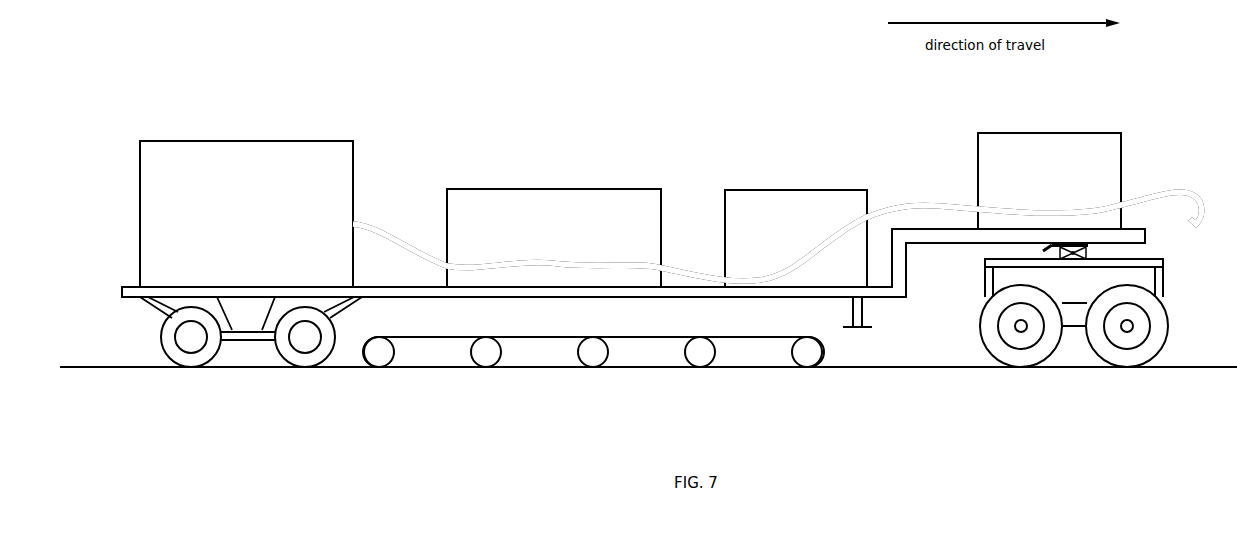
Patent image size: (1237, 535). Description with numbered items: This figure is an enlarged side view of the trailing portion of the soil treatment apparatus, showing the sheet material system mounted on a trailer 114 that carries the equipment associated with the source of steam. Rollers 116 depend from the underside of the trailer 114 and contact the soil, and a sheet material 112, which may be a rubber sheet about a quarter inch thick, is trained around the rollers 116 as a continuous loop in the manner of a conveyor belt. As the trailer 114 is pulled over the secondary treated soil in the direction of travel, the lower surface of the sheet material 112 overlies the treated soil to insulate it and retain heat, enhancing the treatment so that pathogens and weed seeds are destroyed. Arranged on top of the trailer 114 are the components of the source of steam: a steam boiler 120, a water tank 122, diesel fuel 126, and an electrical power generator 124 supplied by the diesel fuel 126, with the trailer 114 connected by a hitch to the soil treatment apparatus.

The sheet material 112 is at (524, 341).
The trailer 114 is at (899, 298).
The rollers 116 is at (810, 353).
The steam boiler 120 is at (246, 214).
The water tank 122 is at (554, 238).
The electrical power generator 124 is at (1049, 181).
The diesel fuel 126 is at (796, 238).